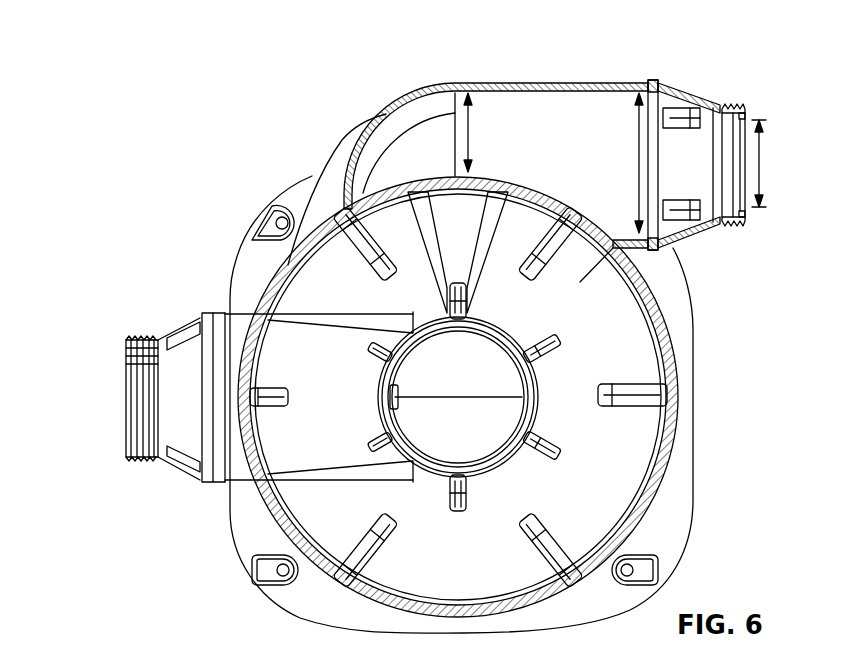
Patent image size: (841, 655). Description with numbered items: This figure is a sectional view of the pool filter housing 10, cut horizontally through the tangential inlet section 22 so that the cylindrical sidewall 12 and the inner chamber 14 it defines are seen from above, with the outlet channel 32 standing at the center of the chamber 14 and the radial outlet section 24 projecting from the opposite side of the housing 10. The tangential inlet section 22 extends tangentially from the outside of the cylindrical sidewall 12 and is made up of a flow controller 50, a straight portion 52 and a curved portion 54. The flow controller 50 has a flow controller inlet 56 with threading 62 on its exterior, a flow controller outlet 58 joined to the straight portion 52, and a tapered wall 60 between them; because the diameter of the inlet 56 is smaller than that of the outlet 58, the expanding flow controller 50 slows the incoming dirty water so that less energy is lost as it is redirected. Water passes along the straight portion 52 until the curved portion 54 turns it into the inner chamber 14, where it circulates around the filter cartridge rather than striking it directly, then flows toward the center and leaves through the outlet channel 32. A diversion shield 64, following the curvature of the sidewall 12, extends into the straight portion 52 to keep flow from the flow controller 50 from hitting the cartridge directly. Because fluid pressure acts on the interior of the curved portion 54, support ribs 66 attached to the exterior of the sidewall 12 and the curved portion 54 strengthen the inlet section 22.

The pool filter housing 10 is at (93, 57).
The cylindrical sidewall 12 is at (645, 515).
The inner chamber 14 is at (608, 360).
The tangential inlet section 22 is at (550, 79).
The outlet section 24 is at (175, 327).
The outlet channel 32 is at (543, 402).
The flow controller 50 is at (708, 231).
The straight portion 52 is at (478, 80).
The curved portion 54 is at (403, 96).
The flow controller inlet 56 is at (747, 100).
The flow controller outlet 58 is at (657, 76).
The tapered wall 60 is at (688, 96).
The threading 62 is at (730, 100).
The diversion shield 64 is at (524, 183).
The support ribs 66 is at (334, 152).